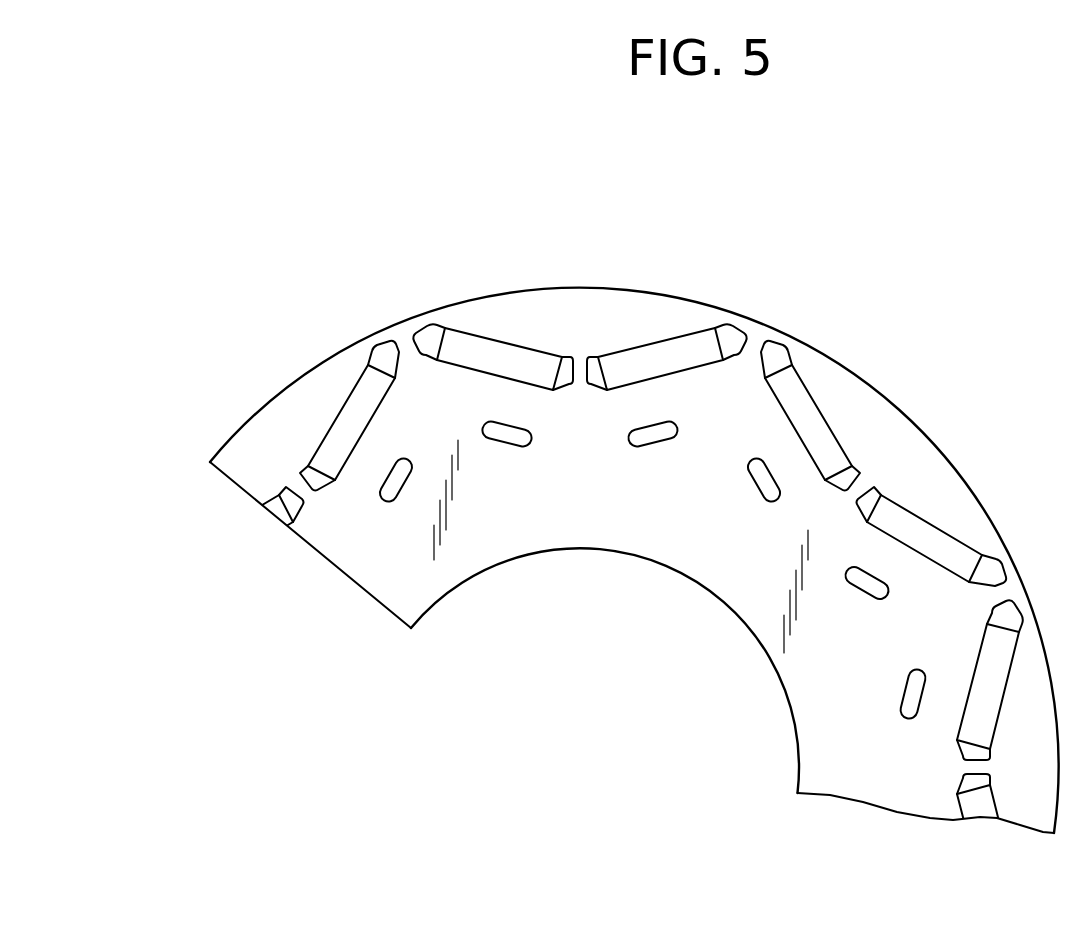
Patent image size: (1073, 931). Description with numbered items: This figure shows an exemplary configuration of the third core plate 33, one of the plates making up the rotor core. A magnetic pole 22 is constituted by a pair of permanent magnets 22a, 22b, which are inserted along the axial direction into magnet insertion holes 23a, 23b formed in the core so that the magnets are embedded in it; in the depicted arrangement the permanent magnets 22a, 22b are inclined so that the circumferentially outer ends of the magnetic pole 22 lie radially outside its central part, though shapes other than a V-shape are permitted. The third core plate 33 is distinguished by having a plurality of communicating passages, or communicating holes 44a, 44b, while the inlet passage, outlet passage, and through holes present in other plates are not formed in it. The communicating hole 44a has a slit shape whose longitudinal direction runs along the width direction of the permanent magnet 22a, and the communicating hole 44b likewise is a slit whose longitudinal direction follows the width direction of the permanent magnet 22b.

The magnetic pole 22 is at (503, 222).
The permanent magnet 22a is at (492, 348).
The permanent magnet 22b is at (668, 350).
The magnet insertion hole 23a is at (427, 336).
The magnet insertion hole 23b is at (733, 336).
The third core plate 33 is at (278, 420).
The communicating hole 44a is at (508, 446).
The communicating hole 44b is at (650, 446).